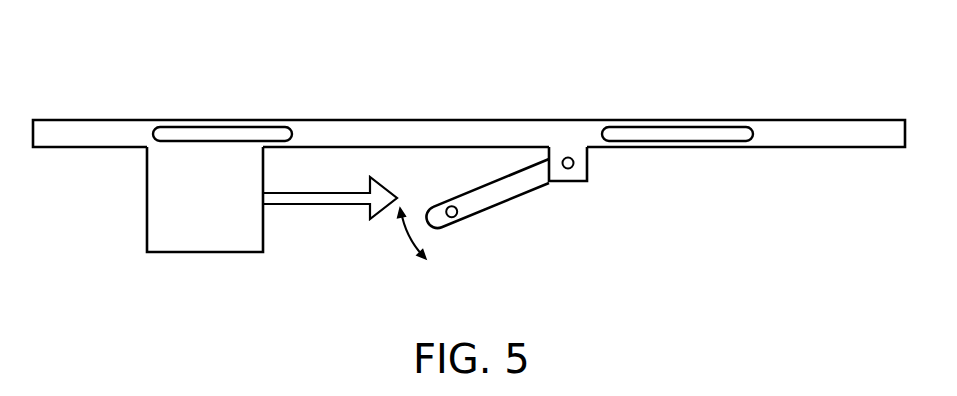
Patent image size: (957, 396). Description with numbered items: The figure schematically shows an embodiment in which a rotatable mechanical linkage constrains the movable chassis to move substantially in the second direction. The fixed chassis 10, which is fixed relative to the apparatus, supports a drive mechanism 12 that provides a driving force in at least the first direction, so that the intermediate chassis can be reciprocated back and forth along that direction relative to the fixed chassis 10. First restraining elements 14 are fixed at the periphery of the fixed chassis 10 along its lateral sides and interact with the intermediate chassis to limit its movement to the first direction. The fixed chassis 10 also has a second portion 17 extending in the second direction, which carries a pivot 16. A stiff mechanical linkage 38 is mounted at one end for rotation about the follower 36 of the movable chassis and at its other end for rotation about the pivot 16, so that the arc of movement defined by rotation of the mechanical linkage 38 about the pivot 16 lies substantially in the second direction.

The fixed chassis 10 is at (885, 130).
The drive mechanism 12 is at (205, 255).
The first restraining elements 14 is at (220, 132).
The pivot 16 is at (571, 171).
The second portion 17 is at (587, 168).
The follower 36 is at (451, 219).
The mechanical linkage 38 is at (493, 197).